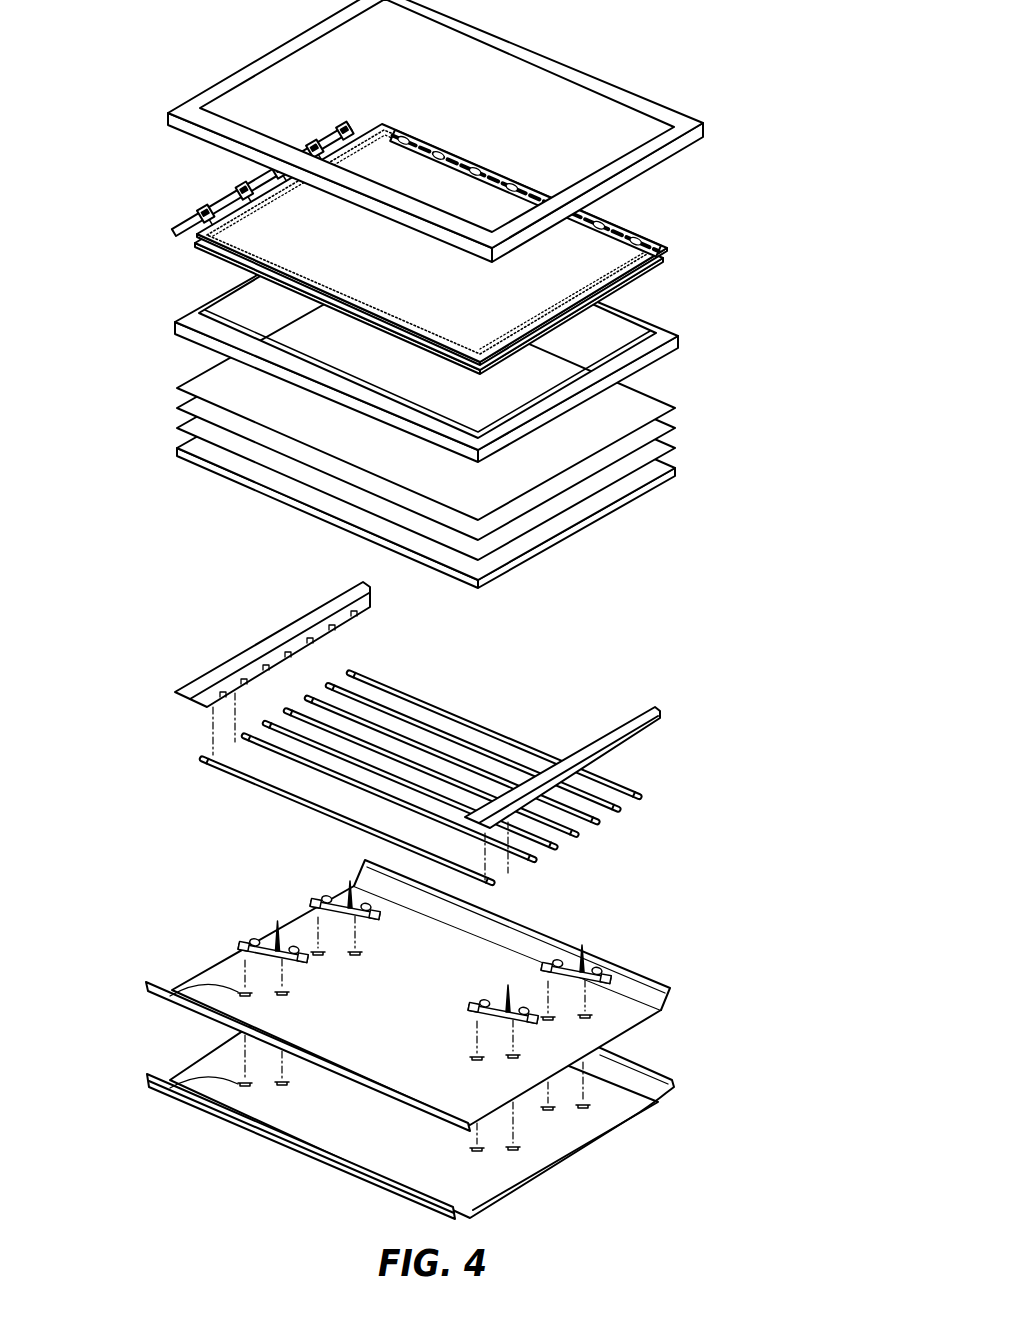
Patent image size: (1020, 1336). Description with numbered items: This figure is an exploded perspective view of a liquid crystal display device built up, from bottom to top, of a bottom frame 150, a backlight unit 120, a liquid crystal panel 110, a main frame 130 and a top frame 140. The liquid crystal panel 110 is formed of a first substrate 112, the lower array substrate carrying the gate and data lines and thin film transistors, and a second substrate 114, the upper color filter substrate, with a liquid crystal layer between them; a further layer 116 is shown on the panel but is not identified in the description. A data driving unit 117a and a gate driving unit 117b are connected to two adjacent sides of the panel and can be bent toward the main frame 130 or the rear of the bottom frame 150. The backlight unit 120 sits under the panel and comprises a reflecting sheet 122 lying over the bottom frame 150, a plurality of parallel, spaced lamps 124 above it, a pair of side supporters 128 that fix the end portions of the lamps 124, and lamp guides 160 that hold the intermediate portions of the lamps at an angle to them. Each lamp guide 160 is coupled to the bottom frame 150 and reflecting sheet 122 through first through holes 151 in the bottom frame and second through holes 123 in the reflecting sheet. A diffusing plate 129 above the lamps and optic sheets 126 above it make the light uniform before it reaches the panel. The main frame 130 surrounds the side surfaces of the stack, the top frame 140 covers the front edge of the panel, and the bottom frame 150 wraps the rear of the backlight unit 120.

The liquid crystal panel 110 is at (475, 248).
The first substrate 112 is at (628, 283).
The second substrate 114 is at (662, 258).
The polarizer 116 is at (663, 241).
The data driving unit 117a is at (633, 226).
The gate driving unit 117b is at (213, 205).
The backlight unit 120 is at (454, 713).
The reflecting sheet 122 is at (609, 1012).
The second through holes 123 is at (166, 1003).
The lamps 124 is at (617, 783).
The optic sheets 126 is at (463, 418).
The side supporters 128 is at (598, 735).
The diffusing plate 129 is at (628, 488).
The main frame 130 is at (170, 335).
The top frame 140 is at (190, 105).
The bottom frame 150 is at (540, 1157).
The first through holes 151 is at (163, 1093).
The lamp guides 160 is at (229, 948).